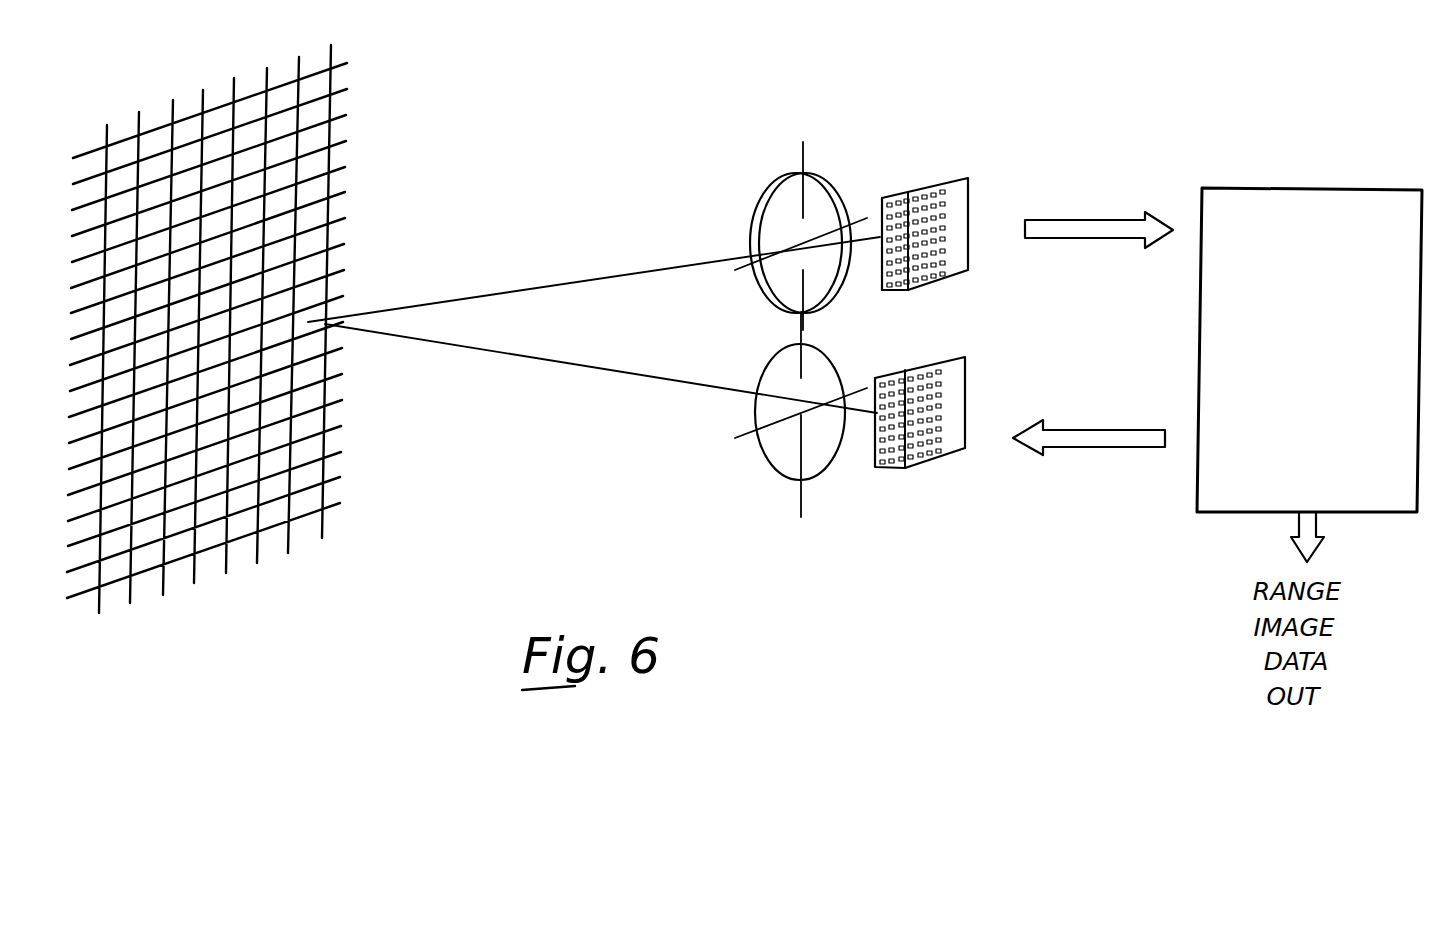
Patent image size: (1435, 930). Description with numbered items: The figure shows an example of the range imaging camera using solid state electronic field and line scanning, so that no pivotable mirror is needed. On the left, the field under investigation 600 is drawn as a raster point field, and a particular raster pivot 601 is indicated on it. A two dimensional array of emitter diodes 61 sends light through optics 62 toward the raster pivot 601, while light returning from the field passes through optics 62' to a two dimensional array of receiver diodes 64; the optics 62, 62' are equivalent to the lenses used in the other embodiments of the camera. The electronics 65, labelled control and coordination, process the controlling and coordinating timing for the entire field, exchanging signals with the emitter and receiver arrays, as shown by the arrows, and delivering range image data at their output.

The grid target surface 600 is at (328, 294).
The raster pivot 601 is at (307, 323).
The optics 62' is at (827, 216).
The two dimensional array of receiver diodes 64 is at (957, 178).
The optics 62 is at (801, 439).
The two dimensional array of emitter diodes 61 is at (905, 470).
The electronics for processing the controlling and coordinating timing 65 is at (1288, 296).